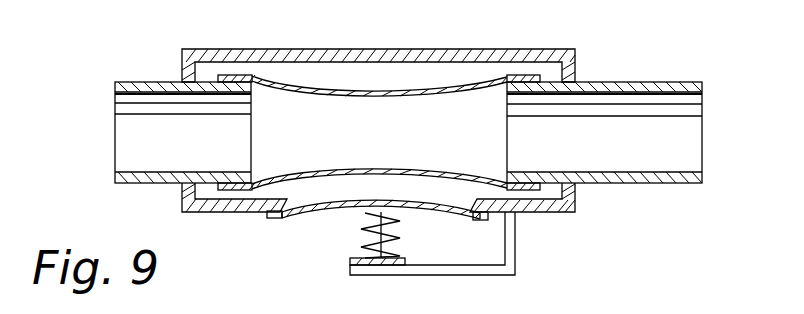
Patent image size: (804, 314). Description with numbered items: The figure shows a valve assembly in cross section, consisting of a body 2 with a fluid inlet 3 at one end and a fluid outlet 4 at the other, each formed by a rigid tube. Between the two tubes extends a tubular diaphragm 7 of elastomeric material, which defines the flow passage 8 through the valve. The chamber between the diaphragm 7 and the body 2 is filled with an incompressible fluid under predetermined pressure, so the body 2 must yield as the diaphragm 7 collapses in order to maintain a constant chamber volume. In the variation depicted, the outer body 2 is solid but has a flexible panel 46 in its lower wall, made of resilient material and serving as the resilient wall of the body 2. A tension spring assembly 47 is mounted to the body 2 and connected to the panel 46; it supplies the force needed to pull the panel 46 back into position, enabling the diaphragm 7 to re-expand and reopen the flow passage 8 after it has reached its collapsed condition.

The body 2 is at (530, 50).
The fluid inlet 3 is at (123, 148).
The fluid outlet 4 is at (680, 147).
The diaphragm 7 is at (327, 88).
The flow passage 8 is at (443, 143).
The flexible panel 46 is at (312, 217).
The tension spring assembly 47 is at (358, 237).